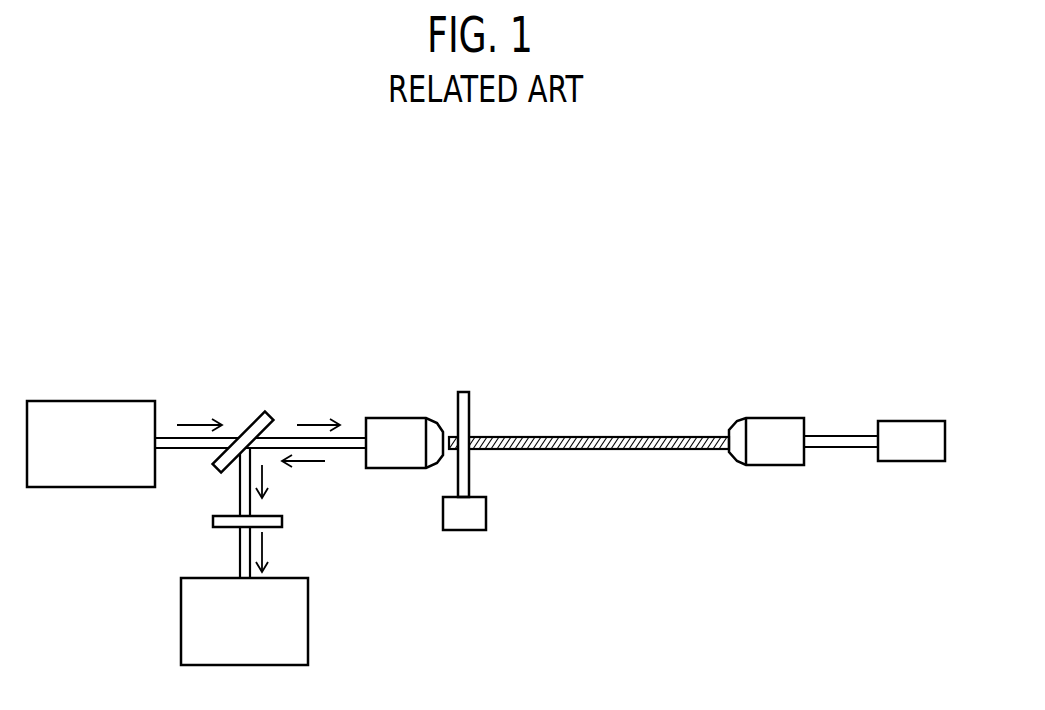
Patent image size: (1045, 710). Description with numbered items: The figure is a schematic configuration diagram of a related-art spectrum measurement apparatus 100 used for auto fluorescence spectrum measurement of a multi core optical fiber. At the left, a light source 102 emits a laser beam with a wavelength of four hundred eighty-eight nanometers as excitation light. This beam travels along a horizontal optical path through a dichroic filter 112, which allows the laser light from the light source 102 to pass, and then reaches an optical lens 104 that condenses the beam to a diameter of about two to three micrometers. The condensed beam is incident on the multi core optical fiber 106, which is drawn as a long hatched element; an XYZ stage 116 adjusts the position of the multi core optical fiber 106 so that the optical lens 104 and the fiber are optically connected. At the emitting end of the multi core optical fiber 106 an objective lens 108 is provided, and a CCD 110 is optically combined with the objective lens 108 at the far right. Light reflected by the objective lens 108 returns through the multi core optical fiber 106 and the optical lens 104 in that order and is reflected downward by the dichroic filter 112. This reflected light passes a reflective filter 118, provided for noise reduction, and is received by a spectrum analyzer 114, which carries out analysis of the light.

The spectrum measurement apparatus 100 is at (721, 240).
The light source 102 is at (88, 401).
The optical lens 104 is at (396, 418).
The multi core optical fiber 106 is at (566, 437).
The objective lens 108 is at (771, 418).
The CCD 110 is at (910, 421).
The dichroic filter 112 is at (244, 414).
The spectrum analyzer 114 is at (308, 618).
The XYZ stage 116 is at (472, 467).
The reflective filter 118 is at (212, 521).